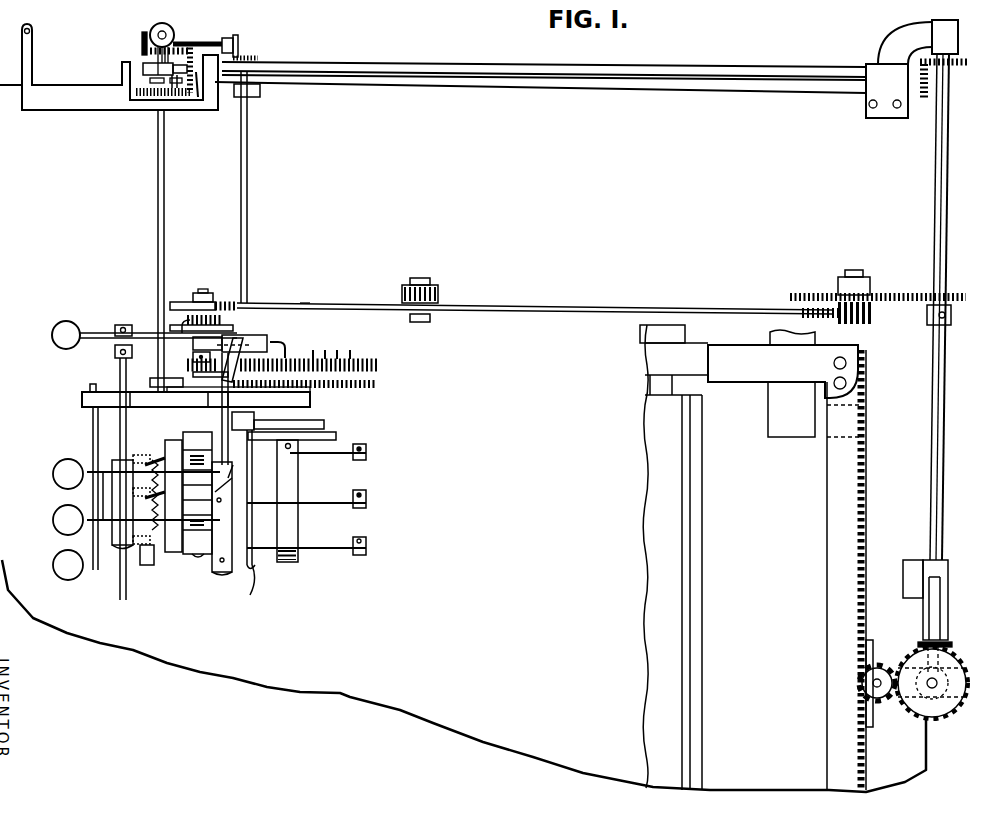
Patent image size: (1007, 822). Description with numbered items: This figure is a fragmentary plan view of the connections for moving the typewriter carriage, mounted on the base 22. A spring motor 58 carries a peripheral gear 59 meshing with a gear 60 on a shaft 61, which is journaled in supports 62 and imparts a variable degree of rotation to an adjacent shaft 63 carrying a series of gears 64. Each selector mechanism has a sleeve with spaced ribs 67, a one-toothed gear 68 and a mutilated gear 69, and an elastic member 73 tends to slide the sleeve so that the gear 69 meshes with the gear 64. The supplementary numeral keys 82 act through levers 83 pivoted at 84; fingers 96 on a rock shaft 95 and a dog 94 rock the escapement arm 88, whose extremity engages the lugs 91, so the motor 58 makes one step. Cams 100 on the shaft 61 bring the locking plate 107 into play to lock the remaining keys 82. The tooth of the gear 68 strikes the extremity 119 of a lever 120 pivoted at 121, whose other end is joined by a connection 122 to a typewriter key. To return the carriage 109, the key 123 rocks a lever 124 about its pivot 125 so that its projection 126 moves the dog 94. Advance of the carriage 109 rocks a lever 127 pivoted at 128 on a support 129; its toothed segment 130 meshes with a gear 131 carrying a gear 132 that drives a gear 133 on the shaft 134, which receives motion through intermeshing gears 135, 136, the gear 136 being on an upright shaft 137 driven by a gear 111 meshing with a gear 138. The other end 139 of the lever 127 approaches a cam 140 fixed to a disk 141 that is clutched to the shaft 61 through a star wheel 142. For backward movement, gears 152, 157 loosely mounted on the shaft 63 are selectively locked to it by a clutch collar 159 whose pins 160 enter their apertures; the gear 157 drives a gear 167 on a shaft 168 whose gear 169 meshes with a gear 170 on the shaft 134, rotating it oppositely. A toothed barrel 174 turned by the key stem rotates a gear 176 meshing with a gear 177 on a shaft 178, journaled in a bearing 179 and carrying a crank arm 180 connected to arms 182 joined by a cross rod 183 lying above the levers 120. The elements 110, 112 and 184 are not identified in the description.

The base 22 is at (500, 90).
The motor 58 is at (372, 384).
The gear 59 is at (372, 359).
The gear 60 is at (186, 367).
The shaft 61 is at (197, 562).
The supports 62 is at (308, 405).
The shaft 63 is at (156, 160).
The gears 64 is at (128, 450).
The peripheral spaced ribs 67 is at (180, 553).
The one-toothed gear 68 is at (255, 550).
The mutilated gear 69 is at (253, 493).
The elastic member 73 is at (138, 545).
The numeral key 82 is at (58, 487).
The lever 83 is at (103, 479).
The pivot 84 is at (112, 448).
The escapement arm 88 is at (290, 356).
The pins 91 is at (338, 349).
The dog 94 is at (238, 333).
The rock shaft 95 is at (233, 409).
The fingers 96 is at (232, 476).
The cams 100 is at (120, 438).
The locking plate 107 is at (165, 560).
The carriage 109 is at (692, 347).
The pinion 110 is at (882, 677).
The gear 111 is at (886, 700).
The rack 112 is at (828, 468).
The extremity 119 is at (252, 498).
The lever 120 is at (318, 501).
The pivot 121 is at (287, 566).
The connection 122 is at (366, 446).
The key 123 is at (70, 320).
The lever 124 is at (102, 332).
The pivot 125 is at (118, 368).
The projection 126 is at (180, 320).
The lever 127 is at (554, 312).
The pivot 128 is at (420, 320).
The support 129 is at (438, 291).
The toothed segment 130 is at (830, 319).
The gear 131 is at (874, 311).
The gear 132 is at (886, 293).
The gear 133 is at (950, 299).
The shaft 134 is at (948, 180).
The gear 135 is at (948, 643).
The gear 136 is at (969, 686).
The upright shaft 137 is at (932, 689).
The gear 138 is at (955, 667).
The end 139 is at (312, 306).
The cam 140 is at (176, 298).
The disk 141 is at (188, 302).
The star gear 142 is at (220, 302).
The gear 152 is at (144, 50).
The gear 157 is at (145, 100).
The clutch member 159 is at (181, 47).
The pins 160 is at (180, 96).
The gear 167 is at (198, 100).
The shaft 168 is at (420, 54).
The gear 169 is at (926, 100).
The gear 170 is at (965, 62).
The toothed cylinder 174 is at (213, 42).
The gear 176 is at (238, 40).
The gear 177 is at (259, 58).
The shaft 178 is at (249, 173).
The bearing 179 is at (261, 92).
The crank arm 180 is at (254, 422).
The arms 182 is at (324, 423).
The cross bar 183 is at (252, 587).
The plate 184 is at (300, 437).